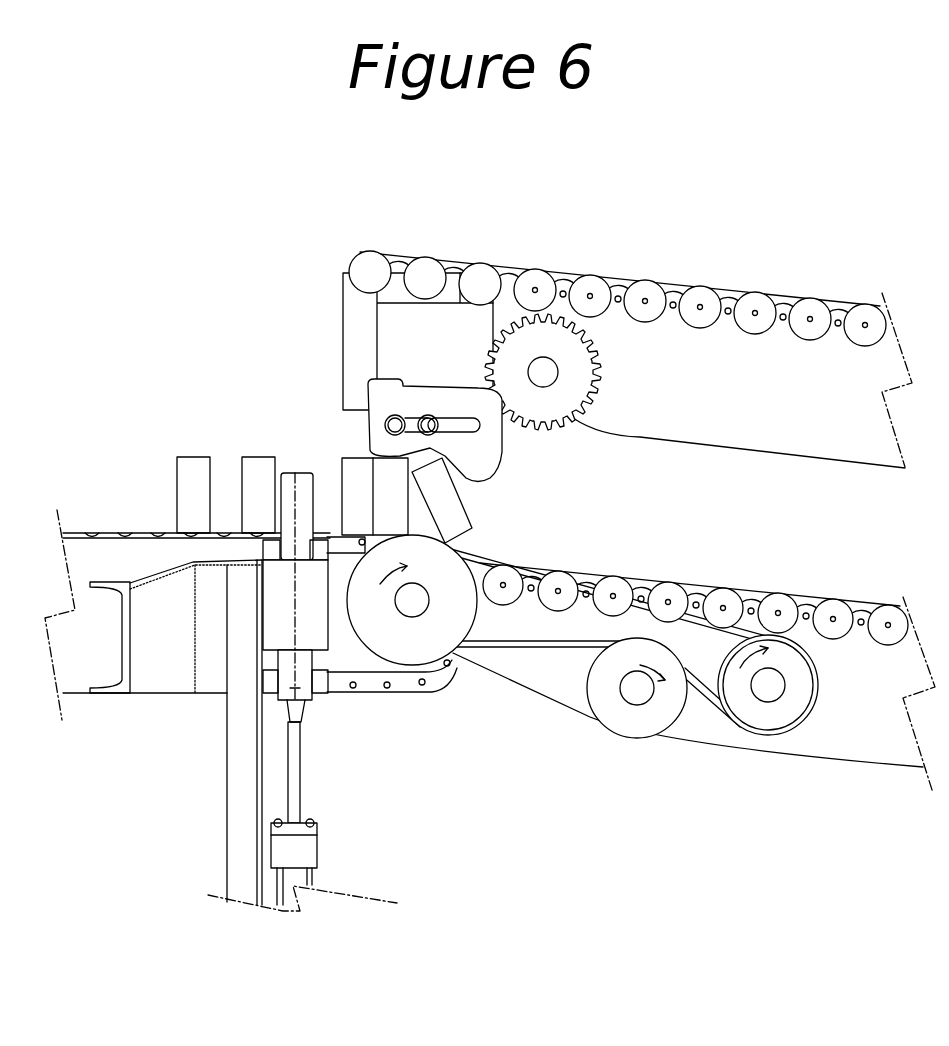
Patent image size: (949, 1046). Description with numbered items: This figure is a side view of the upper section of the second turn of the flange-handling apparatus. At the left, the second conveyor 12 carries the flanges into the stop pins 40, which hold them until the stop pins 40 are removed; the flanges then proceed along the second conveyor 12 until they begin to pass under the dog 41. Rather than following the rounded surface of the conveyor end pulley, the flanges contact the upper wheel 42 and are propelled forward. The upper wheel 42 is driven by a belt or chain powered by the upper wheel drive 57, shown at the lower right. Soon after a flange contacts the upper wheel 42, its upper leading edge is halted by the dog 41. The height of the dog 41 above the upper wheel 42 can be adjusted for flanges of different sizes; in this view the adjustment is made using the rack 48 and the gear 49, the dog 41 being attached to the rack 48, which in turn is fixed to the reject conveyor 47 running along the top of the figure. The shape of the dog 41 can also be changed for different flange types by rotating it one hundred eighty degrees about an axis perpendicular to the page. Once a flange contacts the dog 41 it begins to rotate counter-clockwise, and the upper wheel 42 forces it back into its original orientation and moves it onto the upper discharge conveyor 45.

The second conveyor 12 is at (95, 532).
The stop pins 40 is at (290, 473).
The dog 41 is at (502, 457).
The upper wheel 42 is at (362, 643).
The upper discharge conveyor 45 is at (665, 582).
The reject conveyor 47 is at (600, 270).
The rack 48 is at (490, 328).
The gear 49 is at (600, 377).
The upper wheel drive 57 is at (608, 732).